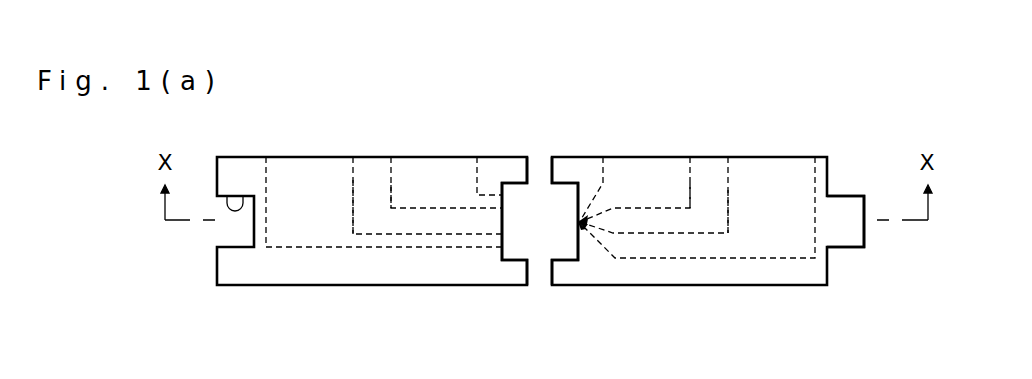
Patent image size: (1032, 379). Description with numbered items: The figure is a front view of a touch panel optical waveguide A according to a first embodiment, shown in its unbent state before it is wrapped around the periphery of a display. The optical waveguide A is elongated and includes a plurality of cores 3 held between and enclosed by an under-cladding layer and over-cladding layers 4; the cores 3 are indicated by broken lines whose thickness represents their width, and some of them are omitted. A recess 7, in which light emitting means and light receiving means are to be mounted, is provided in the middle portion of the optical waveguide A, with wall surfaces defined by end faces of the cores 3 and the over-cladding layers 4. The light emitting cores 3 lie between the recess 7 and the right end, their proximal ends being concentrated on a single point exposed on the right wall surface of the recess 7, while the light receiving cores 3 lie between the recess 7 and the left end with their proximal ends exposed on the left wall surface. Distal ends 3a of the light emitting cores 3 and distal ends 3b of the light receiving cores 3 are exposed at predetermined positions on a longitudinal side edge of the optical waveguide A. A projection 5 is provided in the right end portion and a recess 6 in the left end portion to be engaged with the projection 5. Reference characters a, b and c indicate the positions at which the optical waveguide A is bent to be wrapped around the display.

The cores 3 is at (423, 208).
The distal ends of the light emitting cores 3a is at (690, 157).
The distal ends of the light receiving cores 3b is at (352, 157).
The over-cladding layers 4 is at (295, 172).
The projection 5 is at (850, 215).
The recess 6 is at (227, 197).
The recess 7 is at (553, 212).
The optical waveguide A is at (517, 148).
The bending position a is at (378, 305).
The bending position b is at (540, 305).
The bending position c is at (703, 305).